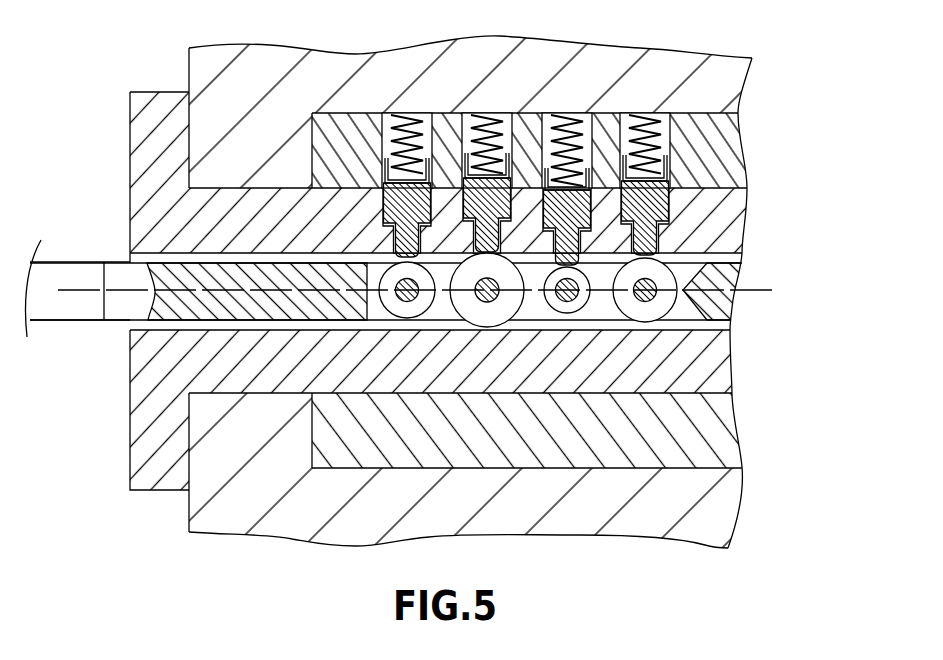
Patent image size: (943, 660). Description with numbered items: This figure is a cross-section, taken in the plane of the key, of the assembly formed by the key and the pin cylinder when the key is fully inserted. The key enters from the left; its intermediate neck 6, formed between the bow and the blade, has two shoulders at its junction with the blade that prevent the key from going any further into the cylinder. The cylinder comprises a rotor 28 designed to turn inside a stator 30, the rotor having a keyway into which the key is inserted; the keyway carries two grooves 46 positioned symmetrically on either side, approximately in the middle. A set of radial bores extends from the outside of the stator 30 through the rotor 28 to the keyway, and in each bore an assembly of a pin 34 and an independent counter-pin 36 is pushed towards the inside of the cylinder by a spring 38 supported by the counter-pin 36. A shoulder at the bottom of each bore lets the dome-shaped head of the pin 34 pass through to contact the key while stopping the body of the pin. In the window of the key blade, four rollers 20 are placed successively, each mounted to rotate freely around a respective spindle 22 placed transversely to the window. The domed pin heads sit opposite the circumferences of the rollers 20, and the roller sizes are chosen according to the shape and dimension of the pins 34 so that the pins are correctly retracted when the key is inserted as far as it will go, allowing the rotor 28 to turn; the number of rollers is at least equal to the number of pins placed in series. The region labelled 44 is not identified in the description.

The intermediate neck 6 is at (78, 322).
The rollers 20 is at (667, 303).
The spindle 22 is at (690, 278).
The rotor 28 is at (680, 368).
The stator 30 is at (343, 128).
The pin 34 is at (670, 200).
The counter-pin 36 is at (668, 162).
The spring 38 is at (653, 115).
The outer block 44 is at (268, 78).
The grooves 46 is at (127, 252).